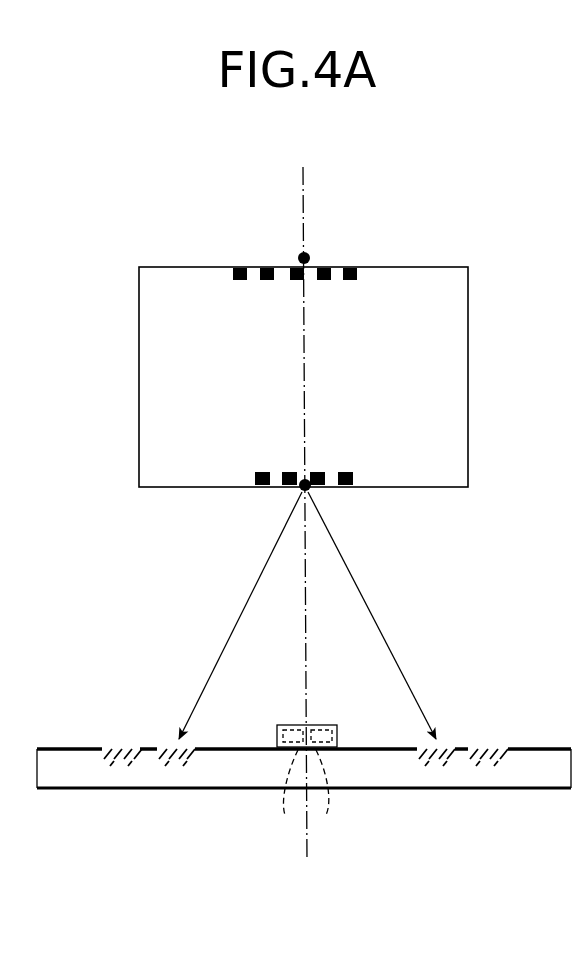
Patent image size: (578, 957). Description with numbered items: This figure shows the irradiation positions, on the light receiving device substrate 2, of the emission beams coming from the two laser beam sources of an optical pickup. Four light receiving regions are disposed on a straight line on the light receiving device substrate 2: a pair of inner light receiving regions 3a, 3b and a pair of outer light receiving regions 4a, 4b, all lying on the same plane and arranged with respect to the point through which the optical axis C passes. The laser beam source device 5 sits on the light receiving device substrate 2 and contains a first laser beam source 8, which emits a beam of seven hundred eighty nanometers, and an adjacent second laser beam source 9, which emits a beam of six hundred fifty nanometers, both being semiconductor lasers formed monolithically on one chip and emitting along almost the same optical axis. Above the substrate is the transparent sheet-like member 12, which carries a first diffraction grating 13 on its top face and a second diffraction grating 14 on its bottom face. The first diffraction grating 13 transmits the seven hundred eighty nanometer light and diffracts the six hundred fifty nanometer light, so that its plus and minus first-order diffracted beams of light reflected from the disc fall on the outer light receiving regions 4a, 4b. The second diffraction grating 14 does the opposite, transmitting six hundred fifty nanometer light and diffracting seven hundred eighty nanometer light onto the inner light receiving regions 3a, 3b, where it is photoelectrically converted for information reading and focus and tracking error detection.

The optical axis C is at (300, 200).
The light receiving device substrate 2 is at (72, 765).
The inner light receiving region 3a is at (437, 762).
The inner light receiving region 3b is at (175, 762).
The outer light receiving region 4a is at (485, 762).
The outer light receiving region 4b is at (122, 762).
The laser beam source device 5 is at (343, 729).
The first laser beam source 8 is at (290, 799).
The second laser beam source 9 is at (324, 799).
The transparent sheet-like member 12 is at (150, 374).
The first diffraction grating 13 is at (350, 266).
The second diffraction grating 14 is at (333, 483).